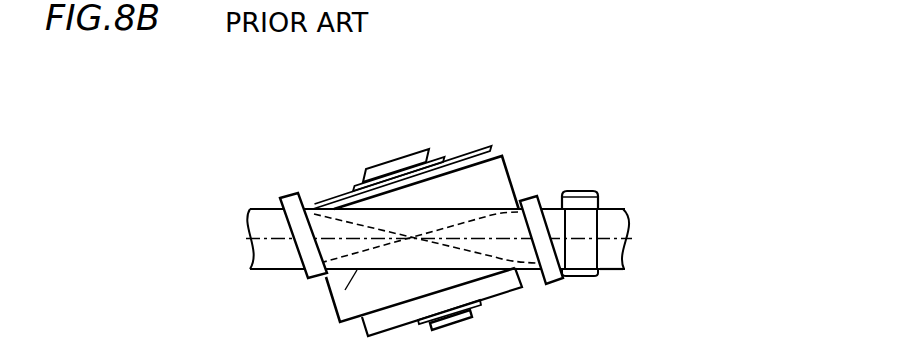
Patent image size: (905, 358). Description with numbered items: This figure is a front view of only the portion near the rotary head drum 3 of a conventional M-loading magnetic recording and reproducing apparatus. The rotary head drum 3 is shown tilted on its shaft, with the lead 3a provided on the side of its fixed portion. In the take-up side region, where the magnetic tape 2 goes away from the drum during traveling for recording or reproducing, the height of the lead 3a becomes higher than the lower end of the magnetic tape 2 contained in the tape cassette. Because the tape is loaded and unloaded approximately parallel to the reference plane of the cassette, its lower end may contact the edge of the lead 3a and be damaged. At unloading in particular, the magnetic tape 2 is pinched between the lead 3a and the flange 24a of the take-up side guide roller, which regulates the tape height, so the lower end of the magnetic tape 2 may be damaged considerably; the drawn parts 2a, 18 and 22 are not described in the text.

The magnetic tape 2 is at (273, 257).
The shaft end portion 2a is at (623, 268).
The rotary head drum 3 is at (422, 195).
The lead 3a is at (357, 270).
The ring 18 is at (293, 196).
The ring 22 is at (529, 212).
The flange of guide roller 24a is at (590, 205).